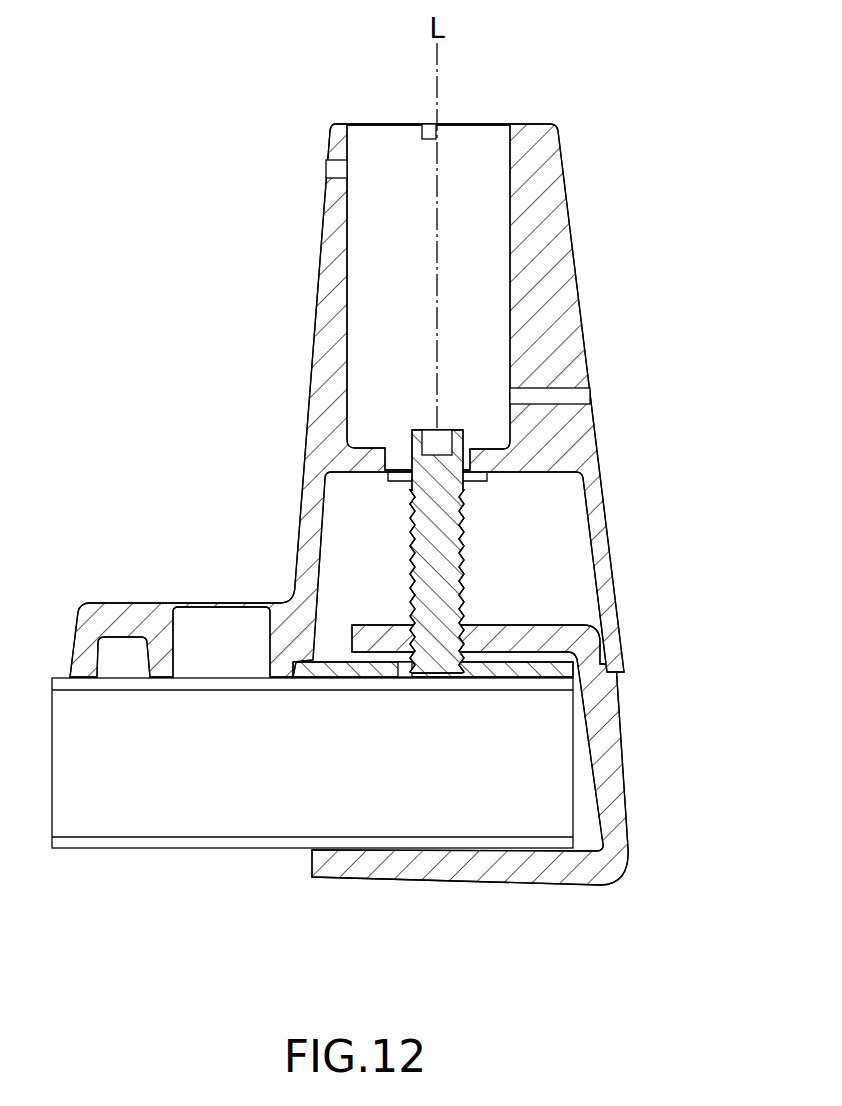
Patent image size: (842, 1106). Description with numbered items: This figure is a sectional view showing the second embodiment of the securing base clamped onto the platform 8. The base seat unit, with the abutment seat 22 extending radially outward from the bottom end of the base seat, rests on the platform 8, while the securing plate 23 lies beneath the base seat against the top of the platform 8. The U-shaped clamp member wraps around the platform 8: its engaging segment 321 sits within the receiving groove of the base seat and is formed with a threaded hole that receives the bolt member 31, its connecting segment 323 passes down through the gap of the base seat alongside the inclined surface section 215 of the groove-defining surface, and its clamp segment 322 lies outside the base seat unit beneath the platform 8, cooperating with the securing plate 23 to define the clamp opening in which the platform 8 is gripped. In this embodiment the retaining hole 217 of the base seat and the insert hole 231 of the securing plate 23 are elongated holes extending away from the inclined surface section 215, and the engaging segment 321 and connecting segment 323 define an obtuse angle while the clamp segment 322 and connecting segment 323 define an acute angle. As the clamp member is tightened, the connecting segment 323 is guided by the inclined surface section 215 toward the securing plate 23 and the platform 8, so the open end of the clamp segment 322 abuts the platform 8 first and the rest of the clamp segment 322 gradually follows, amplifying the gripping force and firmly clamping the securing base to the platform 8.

The retaining hole 217 is at (403, 457).
The bolt member 31 is at (417, 430).
The inclined surface section 215 is at (592, 550).
The abutment seat 22 is at (90, 620).
The engaging segment 321 is at (498, 635).
The securing plate 23 is at (429, 715).
The insert hole 231 is at (412, 670).
The connecting segment 323 is at (604, 772).
The platform 8 is at (165, 852).
The clamp segment 322 is at (503, 870).